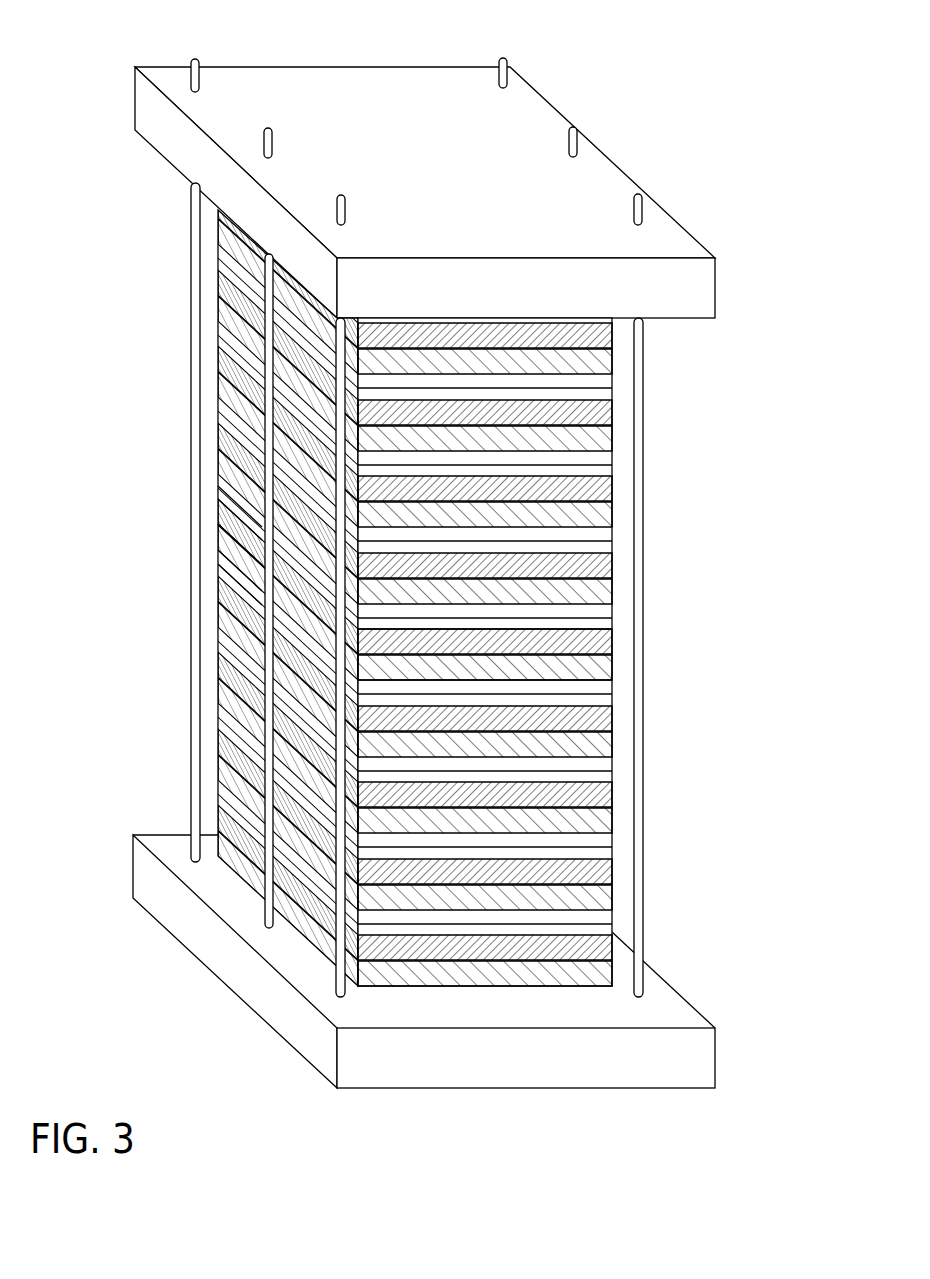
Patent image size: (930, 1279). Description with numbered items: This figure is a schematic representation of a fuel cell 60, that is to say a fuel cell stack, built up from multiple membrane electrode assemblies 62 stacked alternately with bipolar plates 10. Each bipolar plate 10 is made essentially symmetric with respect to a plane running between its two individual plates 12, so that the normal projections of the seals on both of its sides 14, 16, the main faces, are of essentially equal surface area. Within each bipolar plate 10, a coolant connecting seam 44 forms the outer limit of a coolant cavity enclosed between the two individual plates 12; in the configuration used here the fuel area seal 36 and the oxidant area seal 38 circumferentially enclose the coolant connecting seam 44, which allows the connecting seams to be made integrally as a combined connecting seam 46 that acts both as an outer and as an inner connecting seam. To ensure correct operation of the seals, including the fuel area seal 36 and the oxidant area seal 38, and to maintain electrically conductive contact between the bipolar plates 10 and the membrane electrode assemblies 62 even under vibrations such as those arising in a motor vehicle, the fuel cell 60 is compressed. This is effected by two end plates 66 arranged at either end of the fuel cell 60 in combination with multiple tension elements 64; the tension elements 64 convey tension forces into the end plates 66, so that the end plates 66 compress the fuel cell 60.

The bipolar plate 10 is at (385, 585).
The individual plate 12 is at (600, 640).
The side (main face) of the bipolar plate 14 is at (613, 627).
The side (main face) of the bipolar plate 16 is at (613, 675).
The fuel area seal 36 is at (237, 508).
The oxidant area seal 38 is at (223, 562).
The coolant connecting seam 44 is at (231, 534).
The combined connecting seam 46 is at (231, 534).
The fuel cell 60 is at (677, 85).
The membrane electrode assembly 62 is at (225, 492).
The tension element 64 is at (197, 347).
The end plate 66 is at (609, 187).